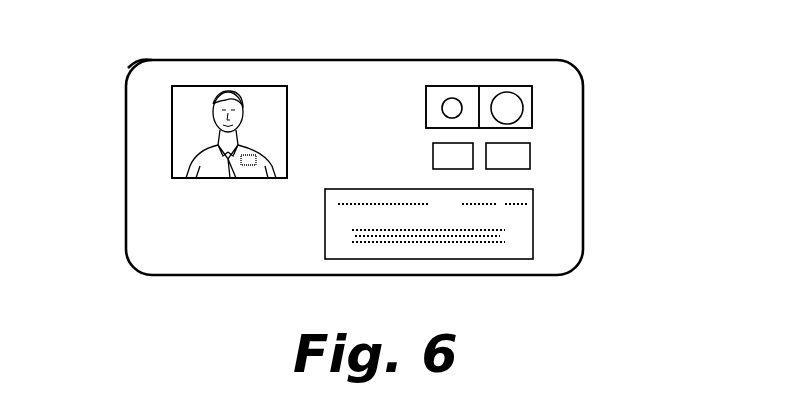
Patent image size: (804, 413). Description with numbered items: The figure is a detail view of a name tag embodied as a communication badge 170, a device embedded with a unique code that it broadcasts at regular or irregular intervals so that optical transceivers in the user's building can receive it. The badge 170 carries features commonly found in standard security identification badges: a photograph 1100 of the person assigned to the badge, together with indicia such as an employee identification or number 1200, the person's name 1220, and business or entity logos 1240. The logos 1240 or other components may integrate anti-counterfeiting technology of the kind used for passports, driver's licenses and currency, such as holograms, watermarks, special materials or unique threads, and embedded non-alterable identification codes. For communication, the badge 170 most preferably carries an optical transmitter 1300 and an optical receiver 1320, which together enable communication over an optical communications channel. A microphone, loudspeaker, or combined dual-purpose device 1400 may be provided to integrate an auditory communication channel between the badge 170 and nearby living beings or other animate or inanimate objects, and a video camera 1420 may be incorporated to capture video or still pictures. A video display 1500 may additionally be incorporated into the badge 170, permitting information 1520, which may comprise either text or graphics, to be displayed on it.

The badge 170 is at (126, 66).
The photograph 1100 is at (172, 178).
The employee identification or number 1200 is at (212, 245).
The name 1220 is at (330, 90).
The business or entity logos 1240 is at (400, 156).
The optical transmitter 1300 is at (532, 100).
The optical receiver 1320 is at (452, 86).
The dual-purpose device 1400 is at (530, 158).
The video camera 1420 is at (473, 143).
The video display 1500 is at (492, 259).
The information 1520 is at (405, 245).